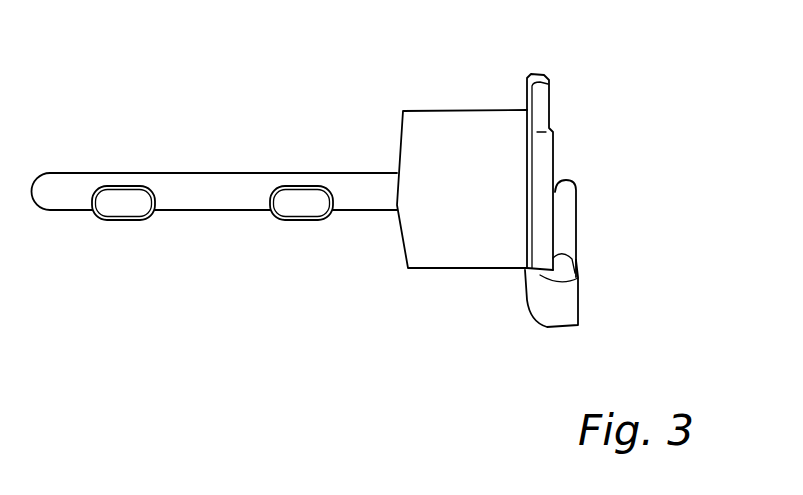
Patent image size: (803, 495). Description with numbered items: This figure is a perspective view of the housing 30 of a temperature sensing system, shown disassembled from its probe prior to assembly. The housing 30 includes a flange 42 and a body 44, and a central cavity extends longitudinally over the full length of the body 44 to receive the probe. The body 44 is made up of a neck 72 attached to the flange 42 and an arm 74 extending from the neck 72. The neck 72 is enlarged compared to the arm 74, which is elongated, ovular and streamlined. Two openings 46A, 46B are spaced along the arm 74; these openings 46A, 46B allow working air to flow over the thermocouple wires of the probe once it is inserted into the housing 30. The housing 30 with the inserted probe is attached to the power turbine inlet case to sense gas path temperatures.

The housing 30 is at (208, 50).
The body 44 is at (318, 136).
The arm 74 is at (218, 180).
The opening 46A is at (286, 221).
The opening 46B is at (108, 221).
The neck 72 is at (482, 110).
The flange 42 is at (552, 133).